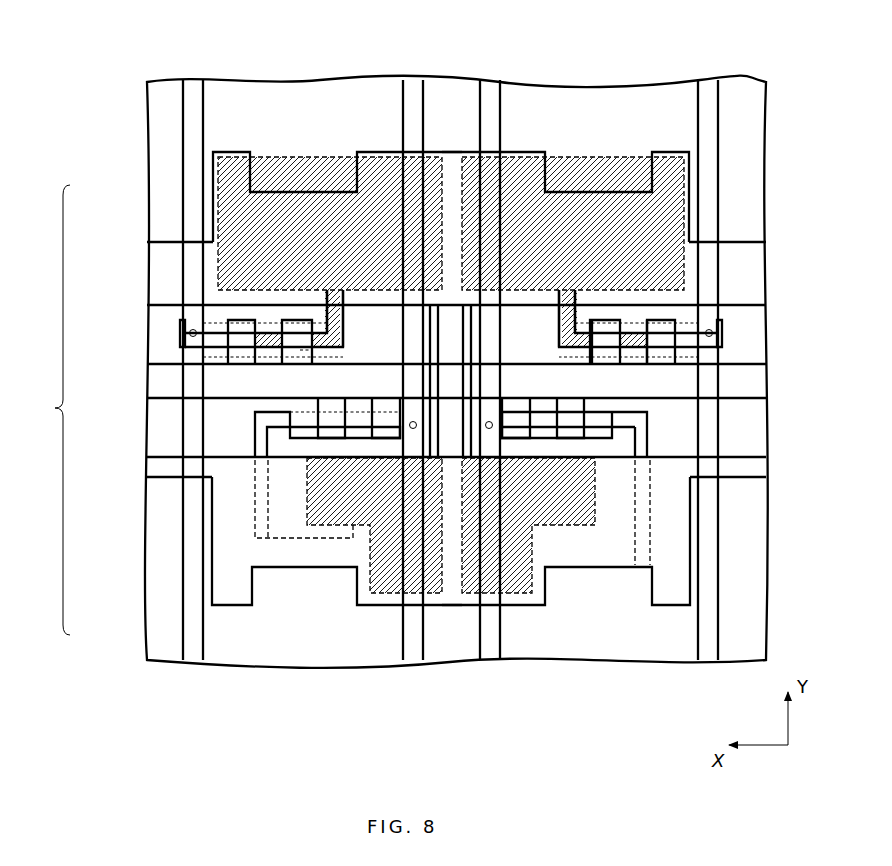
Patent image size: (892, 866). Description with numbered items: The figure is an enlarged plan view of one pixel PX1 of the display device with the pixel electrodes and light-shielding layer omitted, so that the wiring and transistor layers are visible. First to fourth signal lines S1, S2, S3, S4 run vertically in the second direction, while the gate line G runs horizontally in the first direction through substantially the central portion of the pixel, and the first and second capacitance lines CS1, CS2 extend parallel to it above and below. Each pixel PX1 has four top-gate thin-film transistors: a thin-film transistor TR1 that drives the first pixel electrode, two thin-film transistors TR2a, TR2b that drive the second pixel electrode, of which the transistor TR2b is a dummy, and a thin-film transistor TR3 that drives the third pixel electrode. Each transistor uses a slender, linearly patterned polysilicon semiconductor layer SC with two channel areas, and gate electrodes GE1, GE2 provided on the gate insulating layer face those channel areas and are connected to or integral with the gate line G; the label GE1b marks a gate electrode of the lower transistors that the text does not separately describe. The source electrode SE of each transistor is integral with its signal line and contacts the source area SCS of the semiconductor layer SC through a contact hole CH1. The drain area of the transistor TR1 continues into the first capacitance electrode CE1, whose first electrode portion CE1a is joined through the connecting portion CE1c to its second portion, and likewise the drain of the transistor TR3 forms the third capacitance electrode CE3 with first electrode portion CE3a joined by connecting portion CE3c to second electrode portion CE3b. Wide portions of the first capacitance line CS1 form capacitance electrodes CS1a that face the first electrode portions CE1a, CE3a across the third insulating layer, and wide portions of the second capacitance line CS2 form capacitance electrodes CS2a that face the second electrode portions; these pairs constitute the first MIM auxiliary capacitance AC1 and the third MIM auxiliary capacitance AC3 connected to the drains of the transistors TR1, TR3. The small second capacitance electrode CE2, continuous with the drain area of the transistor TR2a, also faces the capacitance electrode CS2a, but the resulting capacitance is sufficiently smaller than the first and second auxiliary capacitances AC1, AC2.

The first signal line S1 is at (195, 84).
The second signal line S2 is at (414, 84).
The third signal line S3 is at (490, 84).
The fourth signal line S4 is at (706, 84).
The first capacitance line CS1 is at (150, 258).
The capacitance electrode CS1a is at (447, 150).
The second capacitance line CS2 is at (150, 462).
The capacitance electrode CS2a is at (452, 598).
The gate line G is at (152, 383).
The first MIM auxiliary capacitance AC1 is at (236, 203).
The second auxiliary capacitance AC2 is at (250, 543).
The third MIM auxiliary capacitance AC3 is at (670, 256).
The first electrode portion CE1a is at (238, 163).
The first electrode portion CE3a is at (691, 190).
The second capacitance electrode CE2 is at (257, 556).
The second electrode portion CE3b is at (573, 522).
The gate electrode GE1b is at (342, 524).
The thin-film transistor TR1 is at (452, 251).
The thin-film transistor TR3 is at (635, 355).
The thin-film transistor TR2a is at (328, 437).
The thin-film transistor TR2b is at (574, 442).
The gate electrode GE1 is at (243, 318).
The gate electrode GE2 is at (296, 318).
The source electrode SE is at (180, 320).
The source area SCS is at (180, 336).
The contact hole CH1 is at (190, 340).
The first capacitance electrode CE1 is at (380, 297).
The third capacitance electrode CE3 is at (536, 297).
The semiconductor layer SC is at (315, 358).
The connecting portion CE1c is at (430, 381).
The connecting portion CE3c is at (474, 381).
The pixel PX1 is at (41, 410).